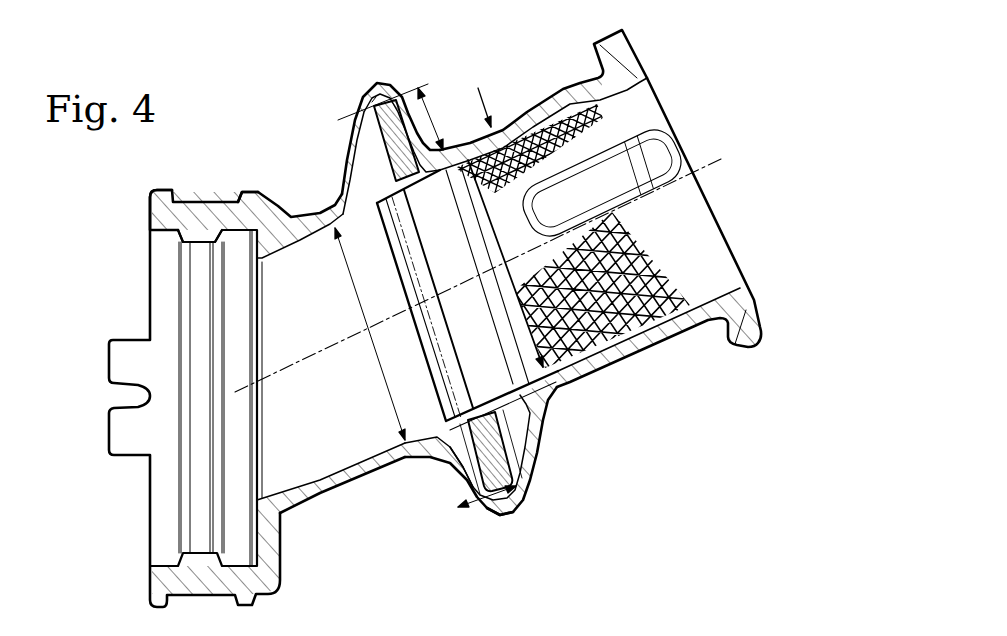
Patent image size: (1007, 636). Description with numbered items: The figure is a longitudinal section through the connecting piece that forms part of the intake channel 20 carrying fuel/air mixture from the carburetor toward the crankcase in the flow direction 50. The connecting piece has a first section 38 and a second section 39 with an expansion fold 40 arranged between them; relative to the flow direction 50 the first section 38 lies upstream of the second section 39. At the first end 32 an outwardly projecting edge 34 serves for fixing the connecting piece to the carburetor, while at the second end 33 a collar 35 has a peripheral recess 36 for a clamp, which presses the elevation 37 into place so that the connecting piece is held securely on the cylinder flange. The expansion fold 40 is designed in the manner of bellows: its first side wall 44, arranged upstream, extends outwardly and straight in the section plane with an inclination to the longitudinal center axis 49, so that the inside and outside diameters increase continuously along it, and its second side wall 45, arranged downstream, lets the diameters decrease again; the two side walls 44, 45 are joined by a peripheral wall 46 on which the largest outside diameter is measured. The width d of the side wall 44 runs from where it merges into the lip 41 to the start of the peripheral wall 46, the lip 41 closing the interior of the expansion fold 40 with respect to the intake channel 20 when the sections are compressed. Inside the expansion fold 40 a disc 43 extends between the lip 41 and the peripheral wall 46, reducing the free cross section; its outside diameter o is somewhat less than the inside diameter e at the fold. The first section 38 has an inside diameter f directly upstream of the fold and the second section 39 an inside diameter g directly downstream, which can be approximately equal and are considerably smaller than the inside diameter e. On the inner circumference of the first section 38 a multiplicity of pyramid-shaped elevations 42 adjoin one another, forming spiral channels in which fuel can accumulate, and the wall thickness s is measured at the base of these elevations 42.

The intake channel 20 is at (343, 443).
The first end 32 is at (760, 298).
The second end 33 is at (140, 578).
The edge 34 is at (620, 40).
The collar 35 is at (222, 217).
The peripheral recess 36 is at (190, 197).
The elevation 37 is at (190, 240).
The first section 38 is at (606, 358).
The second section 39 is at (385, 460).
The expansion fold 40 is at (348, 97).
The lip 41 is at (378, 200).
The elevations 42 is at (672, 300).
The disc 43 is at (495, 443).
The first side wall 44 is at (523, 467).
The second side wall 45 is at (467, 470).
The peripheral wall 46 is at (507, 503).
The longitudinal center axis 49 is at (731, 160).
The flow direction 50 is at (495, 258).
The outside diameter of the disc o is at (376, 196).
The width of the side wall d is at (390, 117).
The wall thickness s is at (500, 155).
The inside diameter of the second section g is at (370, 334).
The inside diameter at the expansion fold e is at (438, 299).
The inside diameter of the first section f is at (494, 272).